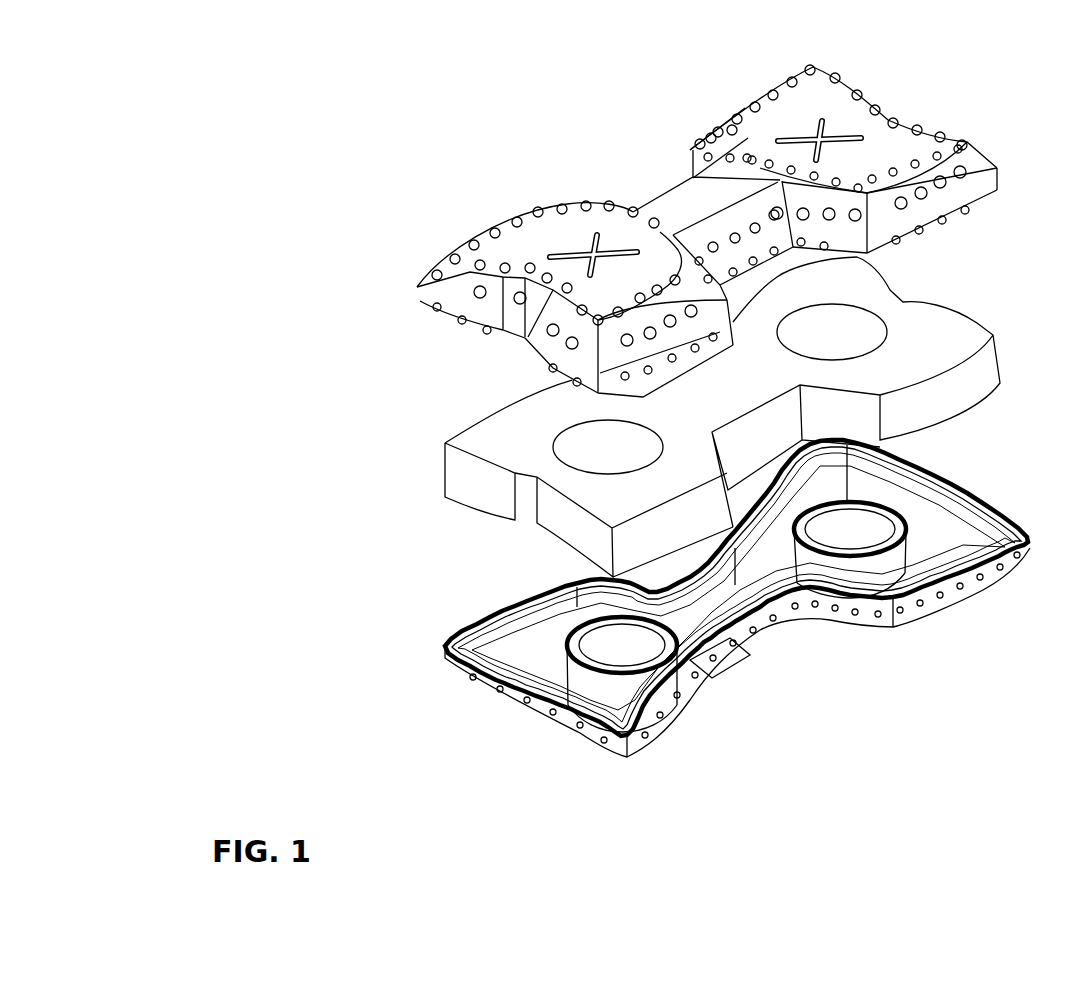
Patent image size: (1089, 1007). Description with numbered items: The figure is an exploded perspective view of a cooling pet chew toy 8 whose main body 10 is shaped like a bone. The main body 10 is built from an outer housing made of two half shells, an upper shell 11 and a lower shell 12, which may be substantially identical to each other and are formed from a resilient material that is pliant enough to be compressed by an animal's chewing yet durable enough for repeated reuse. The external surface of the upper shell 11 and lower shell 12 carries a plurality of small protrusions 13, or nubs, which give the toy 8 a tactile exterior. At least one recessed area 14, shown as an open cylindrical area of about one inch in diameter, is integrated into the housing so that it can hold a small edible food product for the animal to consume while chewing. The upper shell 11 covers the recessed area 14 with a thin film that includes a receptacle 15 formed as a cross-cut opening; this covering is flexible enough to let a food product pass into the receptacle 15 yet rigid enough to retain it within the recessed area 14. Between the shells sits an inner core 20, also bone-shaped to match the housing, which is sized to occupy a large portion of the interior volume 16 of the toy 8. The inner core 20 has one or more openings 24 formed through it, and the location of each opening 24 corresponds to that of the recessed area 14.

The pet toy 8 is at (296, 328).
The main body 10 is at (402, 320).
The upper shell 11 is at (430, 256).
The lower shell 12 is at (470, 685).
The protrusions 13 is at (840, 84).
The recessed area 14 is at (865, 523).
The receptacle 15 is at (790, 126).
The interior volume 16 is at (690, 678).
The inner core 20 is at (443, 470).
The openings 24 is at (870, 323).